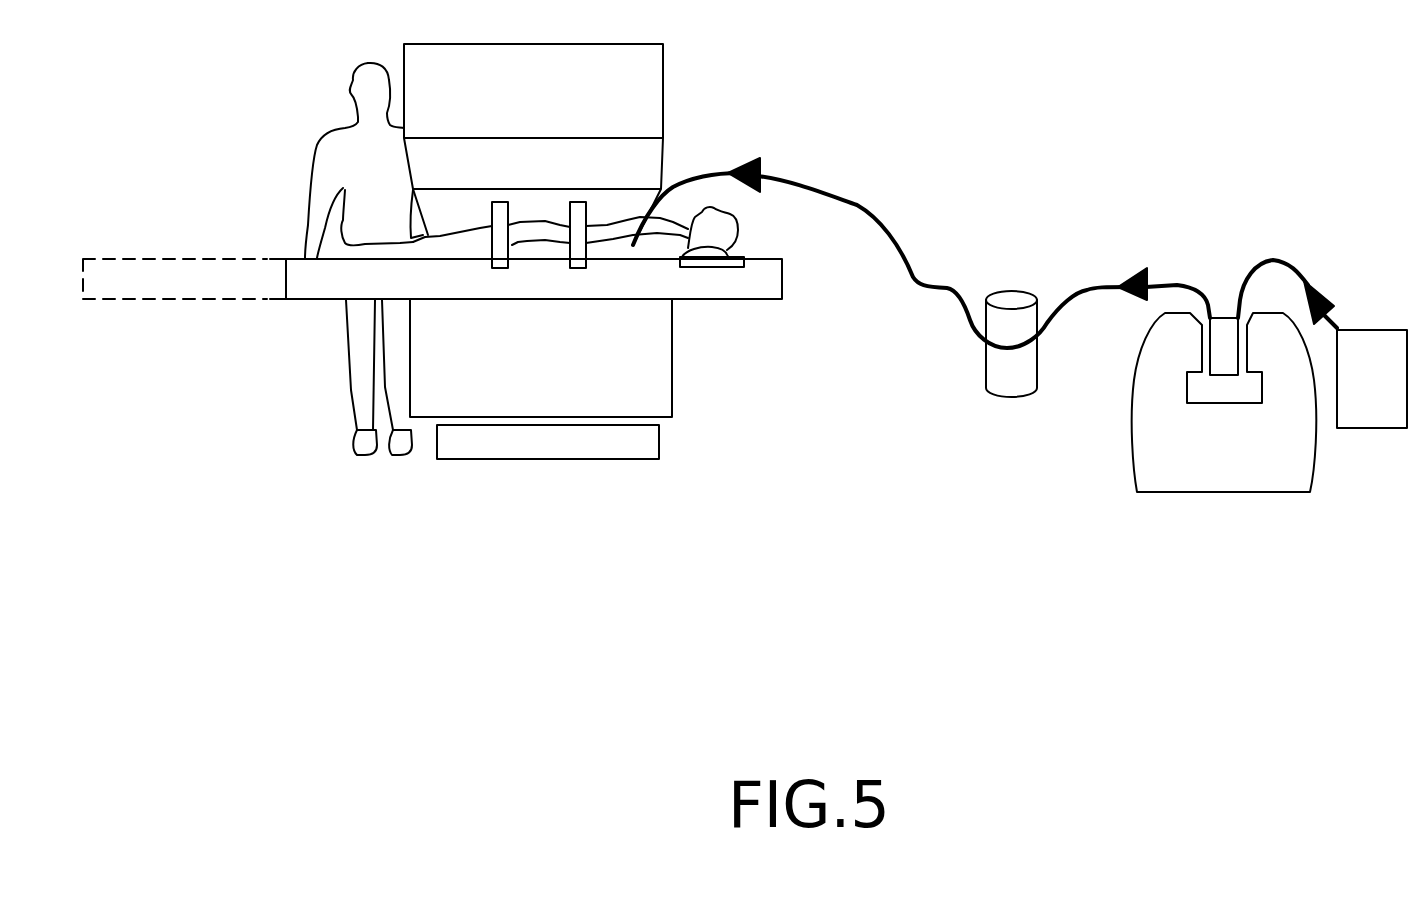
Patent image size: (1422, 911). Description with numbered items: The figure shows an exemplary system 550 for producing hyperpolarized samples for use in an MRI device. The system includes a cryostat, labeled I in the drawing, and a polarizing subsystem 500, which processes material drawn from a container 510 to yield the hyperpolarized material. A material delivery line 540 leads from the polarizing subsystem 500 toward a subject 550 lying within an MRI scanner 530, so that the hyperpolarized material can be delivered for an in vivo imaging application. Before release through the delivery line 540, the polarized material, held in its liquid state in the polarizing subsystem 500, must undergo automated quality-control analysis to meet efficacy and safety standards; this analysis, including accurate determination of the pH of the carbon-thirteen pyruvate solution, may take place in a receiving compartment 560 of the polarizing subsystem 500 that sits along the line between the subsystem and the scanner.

The polarizing subsystem 500 is at (1242, 275).
The container 510 is at (1365, 470).
The MRI scanner 530 is at (663, 87).
The material delivery line 540 is at (857, 205).
The exemplary system (and subject) 550 is at (737, 238).
The receiving compartment 560 is at (1008, 292).
The injector I is at (1158, 450).